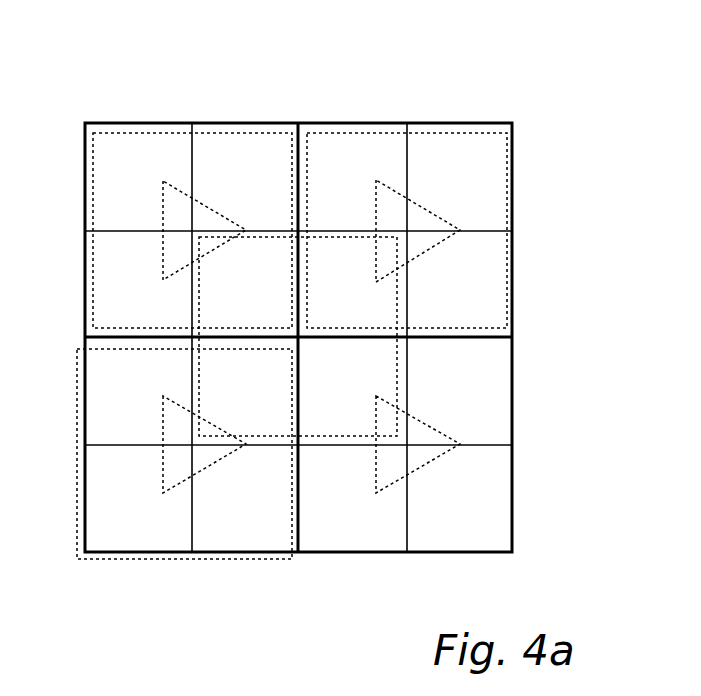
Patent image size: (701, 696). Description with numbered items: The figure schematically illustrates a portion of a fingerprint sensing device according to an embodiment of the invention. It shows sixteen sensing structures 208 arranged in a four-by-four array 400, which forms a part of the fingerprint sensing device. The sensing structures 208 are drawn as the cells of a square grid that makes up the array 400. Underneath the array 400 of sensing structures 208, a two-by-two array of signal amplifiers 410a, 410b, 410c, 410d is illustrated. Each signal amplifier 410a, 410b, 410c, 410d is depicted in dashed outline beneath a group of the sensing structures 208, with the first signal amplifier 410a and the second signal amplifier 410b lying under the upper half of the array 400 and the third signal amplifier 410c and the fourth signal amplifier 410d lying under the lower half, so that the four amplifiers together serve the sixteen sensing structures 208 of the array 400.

The sensing structure 208 is at (482, 515).
The array 400 is at (499, 81).
The signal amplifier 410a is at (177, 190).
The signal amplifier 410b is at (418, 207).
The signal amplifier 410c is at (163, 478).
The signal amplifier 410d is at (425, 421).